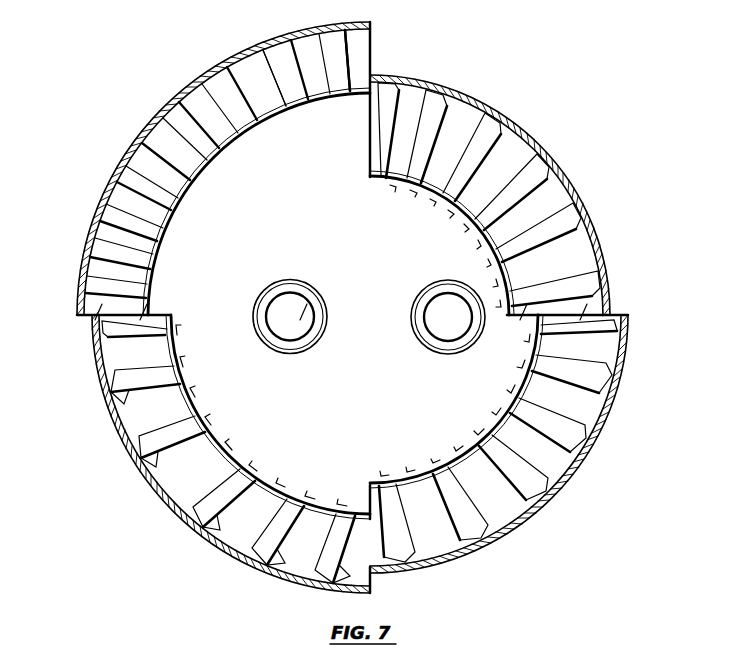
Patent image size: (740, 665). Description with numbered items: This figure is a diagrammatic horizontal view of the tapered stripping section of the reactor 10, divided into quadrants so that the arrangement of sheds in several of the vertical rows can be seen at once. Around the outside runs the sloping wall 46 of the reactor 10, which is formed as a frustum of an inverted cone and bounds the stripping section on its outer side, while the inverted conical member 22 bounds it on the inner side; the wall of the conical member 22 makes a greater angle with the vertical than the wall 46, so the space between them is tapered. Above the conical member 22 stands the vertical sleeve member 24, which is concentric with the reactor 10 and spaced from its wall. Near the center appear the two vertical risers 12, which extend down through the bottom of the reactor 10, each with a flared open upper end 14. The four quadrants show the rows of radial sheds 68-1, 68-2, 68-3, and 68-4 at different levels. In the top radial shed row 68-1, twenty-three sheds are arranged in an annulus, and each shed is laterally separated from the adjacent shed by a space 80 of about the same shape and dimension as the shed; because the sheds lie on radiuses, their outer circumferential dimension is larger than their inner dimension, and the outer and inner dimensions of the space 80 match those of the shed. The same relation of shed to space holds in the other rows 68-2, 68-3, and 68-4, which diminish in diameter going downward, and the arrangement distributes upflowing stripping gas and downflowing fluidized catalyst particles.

The reactor 10 is at (122, 158).
The riser 12 is at (438, 307).
The flared open upper end 14 is at (264, 339).
The inverted conical member 22 is at (462, 213).
The sleeve member 24 is at (189, 196).
The sloping wall 46 is at (535, 138).
The top radial shed row 68-1 is at (267, 60).
The shed row 68-2 is at (133, 397).
The shed row 68-3 is at (486, 512).
The shed row 68-4 is at (573, 200).
The space 80 is at (319, 87).